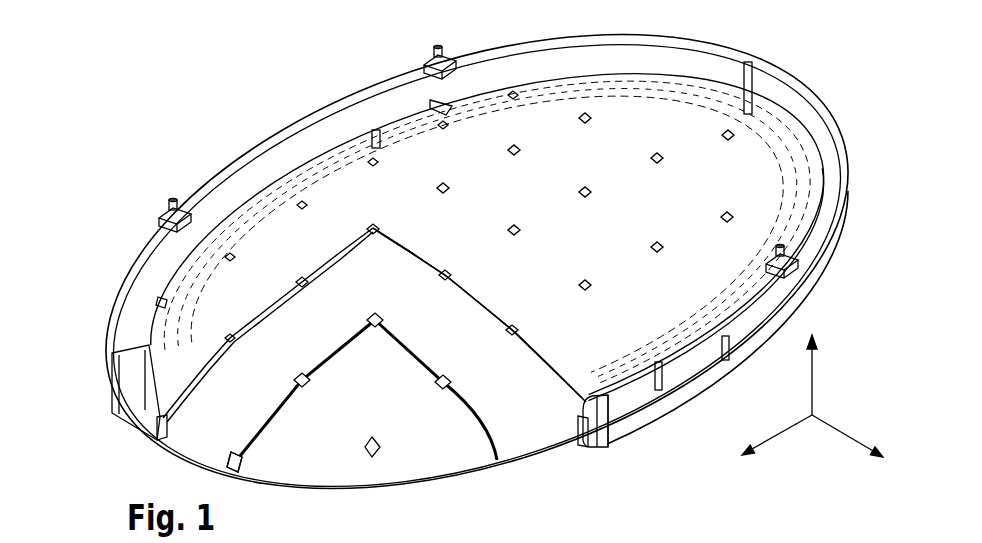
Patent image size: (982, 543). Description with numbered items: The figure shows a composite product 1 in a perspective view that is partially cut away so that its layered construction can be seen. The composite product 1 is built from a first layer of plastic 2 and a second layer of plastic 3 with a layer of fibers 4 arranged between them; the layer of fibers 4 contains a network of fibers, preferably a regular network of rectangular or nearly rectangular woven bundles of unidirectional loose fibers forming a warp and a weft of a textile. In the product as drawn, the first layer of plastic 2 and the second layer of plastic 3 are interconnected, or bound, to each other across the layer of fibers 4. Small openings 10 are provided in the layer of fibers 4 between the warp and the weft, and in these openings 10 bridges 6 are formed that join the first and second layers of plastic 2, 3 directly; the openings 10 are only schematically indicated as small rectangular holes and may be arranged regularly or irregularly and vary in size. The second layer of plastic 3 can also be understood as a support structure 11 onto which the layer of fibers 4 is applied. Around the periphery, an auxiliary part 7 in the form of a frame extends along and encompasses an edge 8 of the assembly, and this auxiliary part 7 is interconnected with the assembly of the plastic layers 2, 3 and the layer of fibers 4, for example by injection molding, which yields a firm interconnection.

The composite product 1 is at (165, 78).
The first layer of plastic 2 is at (350, 191).
The second layer of plastic 3 is at (228, 460).
The layer of fibers 4 is at (214, 348).
The bridges 6 is at (226, 258).
The auxiliary part 7 is at (150, 233).
The edge 8 is at (414, 489).
The openings 10 is at (230, 381).
The support structure 11 is at (228, 460).